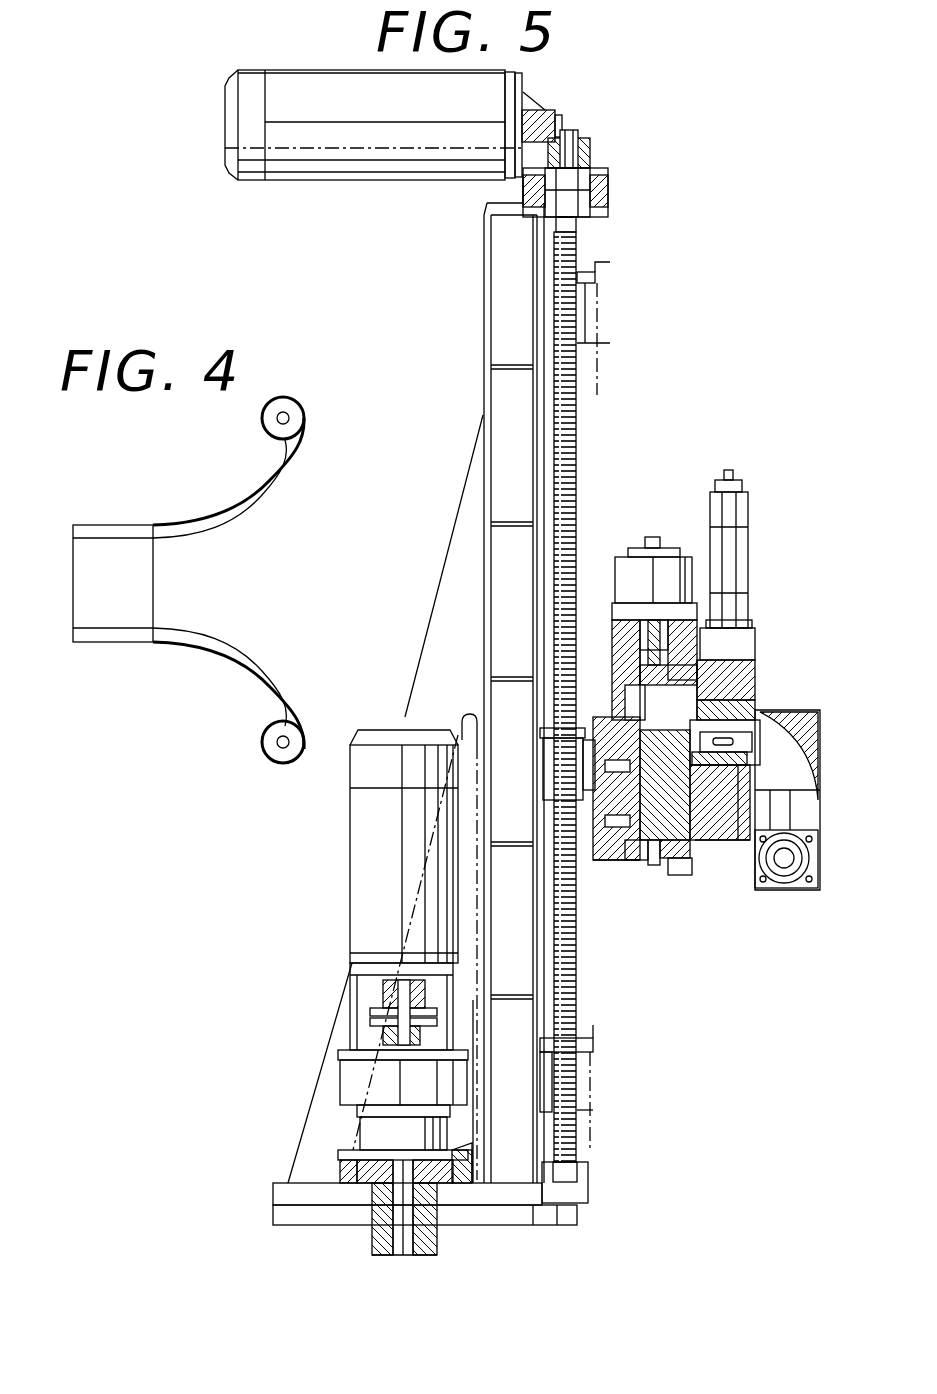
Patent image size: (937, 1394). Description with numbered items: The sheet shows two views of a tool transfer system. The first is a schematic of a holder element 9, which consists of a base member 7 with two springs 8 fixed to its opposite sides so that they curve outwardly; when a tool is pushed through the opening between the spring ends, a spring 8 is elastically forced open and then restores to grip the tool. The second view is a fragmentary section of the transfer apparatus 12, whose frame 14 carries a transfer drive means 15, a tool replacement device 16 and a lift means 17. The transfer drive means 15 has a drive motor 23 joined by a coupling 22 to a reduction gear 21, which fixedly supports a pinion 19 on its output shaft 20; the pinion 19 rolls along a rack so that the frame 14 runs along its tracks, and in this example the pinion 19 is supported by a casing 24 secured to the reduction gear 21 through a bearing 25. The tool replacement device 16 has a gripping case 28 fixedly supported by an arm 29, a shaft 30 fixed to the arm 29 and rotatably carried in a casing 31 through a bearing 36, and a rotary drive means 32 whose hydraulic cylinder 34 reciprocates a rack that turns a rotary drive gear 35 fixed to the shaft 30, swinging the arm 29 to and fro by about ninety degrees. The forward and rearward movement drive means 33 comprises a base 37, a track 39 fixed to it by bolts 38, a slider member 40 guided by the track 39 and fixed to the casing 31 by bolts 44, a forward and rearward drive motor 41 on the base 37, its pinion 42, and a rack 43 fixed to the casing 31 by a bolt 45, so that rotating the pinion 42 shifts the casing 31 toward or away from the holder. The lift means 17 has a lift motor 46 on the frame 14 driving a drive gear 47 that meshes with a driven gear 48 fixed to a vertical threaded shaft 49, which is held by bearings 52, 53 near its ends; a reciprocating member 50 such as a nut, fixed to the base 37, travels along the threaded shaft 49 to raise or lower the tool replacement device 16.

In FIG. 4, the base member 7 is at (85, 582).
In FIG. 4, the springs 8 is at (232, 508).
In FIG. 4, the holder element 9 is at (97, 655).
In FIG. 5, the transfer apparatus 12 is at (476, 332).
In FIG. 5, the frame 14 is at (445, 640).
In FIG. 5, the transfer drive means 15 is at (348, 882).
In FIG. 5, the tool replacement device 16 is at (727, 701).
In FIG. 5, the lift means 17 is at (598, 136).
In FIG. 5, the pinion 19 is at (440, 1242).
In FIG. 5, the output shaft 20 is at (372, 1212).
In FIG. 5, the reduction gear 21 is at (350, 1090).
In FIG. 5, the coupling 22 is at (375, 1010).
In FIG. 5, the drive motor 23 is at (358, 932).
In FIG. 5, the casing 24 is at (338, 1180).
In FIG. 5, the bearing 25 is at (470, 1178).
In FIG. 5, the gripping case 28 is at (785, 882).
In FIG. 5, the arm 29 is at (820, 762).
In FIG. 5, the shaft 30 is at (790, 723).
In FIG. 5, the casing 31 is at (747, 652).
In FIG. 5, the rotary drive means 32 is at (754, 556).
In FIG. 5, the forward and rearward movement drive means 33 is at (632, 538).
In FIG. 5, the hydraulic cylinder 34 is at (735, 540).
In FIG. 5, the rotary drive gear 35 is at (738, 842).
In FIG. 5, the bearing 36 is at (800, 790).
In FIG. 5, the base 37 is at (632, 862).
In FIG. 5, the bolts 38 is at (642, 852).
In FIG. 5, the track 39 is at (608, 808).
In FIG. 5, the slider member 40 is at (675, 862).
In FIG. 5, the forward and rearward drive motor 41 is at (682, 560).
In FIG. 5, the pinion 42 is at (618, 682).
In FIG. 5, the rack 43 is at (736, 672).
In FIG. 5, the bolts 44 is at (697, 850).
In FIG. 5, the bolt 45 is at (736, 692).
In FIG. 5, the lift motor 46 is at (370, 182).
In FIG. 5, the drive gear 47 is at (548, 110).
In FIG. 5, the driven gear 48 is at (590, 155).
In FIG. 5, the threaded shaft 49 is at (578, 412).
In FIG. 5, the reciprocating member 50 is at (558, 792).
In FIG. 5, the bearing 52 is at (600, 208).
In FIG. 5, the bearing 53 is at (598, 1195).